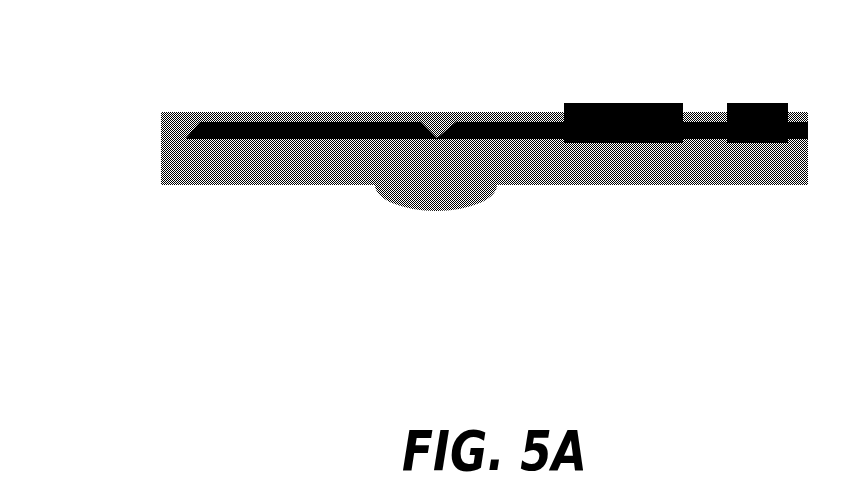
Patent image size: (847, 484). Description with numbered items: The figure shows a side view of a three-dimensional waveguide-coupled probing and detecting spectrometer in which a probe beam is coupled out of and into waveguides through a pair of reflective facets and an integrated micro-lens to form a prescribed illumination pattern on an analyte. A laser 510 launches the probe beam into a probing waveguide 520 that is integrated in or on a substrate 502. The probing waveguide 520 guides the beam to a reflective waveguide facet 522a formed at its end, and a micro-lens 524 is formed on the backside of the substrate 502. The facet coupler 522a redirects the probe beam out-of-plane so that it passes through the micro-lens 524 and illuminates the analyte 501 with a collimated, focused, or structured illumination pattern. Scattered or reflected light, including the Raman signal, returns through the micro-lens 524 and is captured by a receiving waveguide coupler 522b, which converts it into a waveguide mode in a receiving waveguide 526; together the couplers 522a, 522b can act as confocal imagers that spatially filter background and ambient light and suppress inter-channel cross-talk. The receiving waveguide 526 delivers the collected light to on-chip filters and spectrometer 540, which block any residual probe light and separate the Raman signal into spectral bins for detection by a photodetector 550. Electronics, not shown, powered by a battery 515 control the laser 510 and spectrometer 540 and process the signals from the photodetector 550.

The analyte 501 is at (330, 321).
The substrate 502 is at (453, 148).
The laser 510 is at (195, 157).
The battery 515 is at (825, 471).
The probing waveguide 520 is at (216, 113).
The reflective waveguide facet 522a is at (423, 115).
The receiving waveguide coupler 522b is at (455, 115).
The micro-lens 524 is at (382, 200).
The receiving waveguide 526 is at (528, 113).
The on-chip filters and spectrometer 540 is at (618, 146).
The photodetector 550 is at (760, 146).